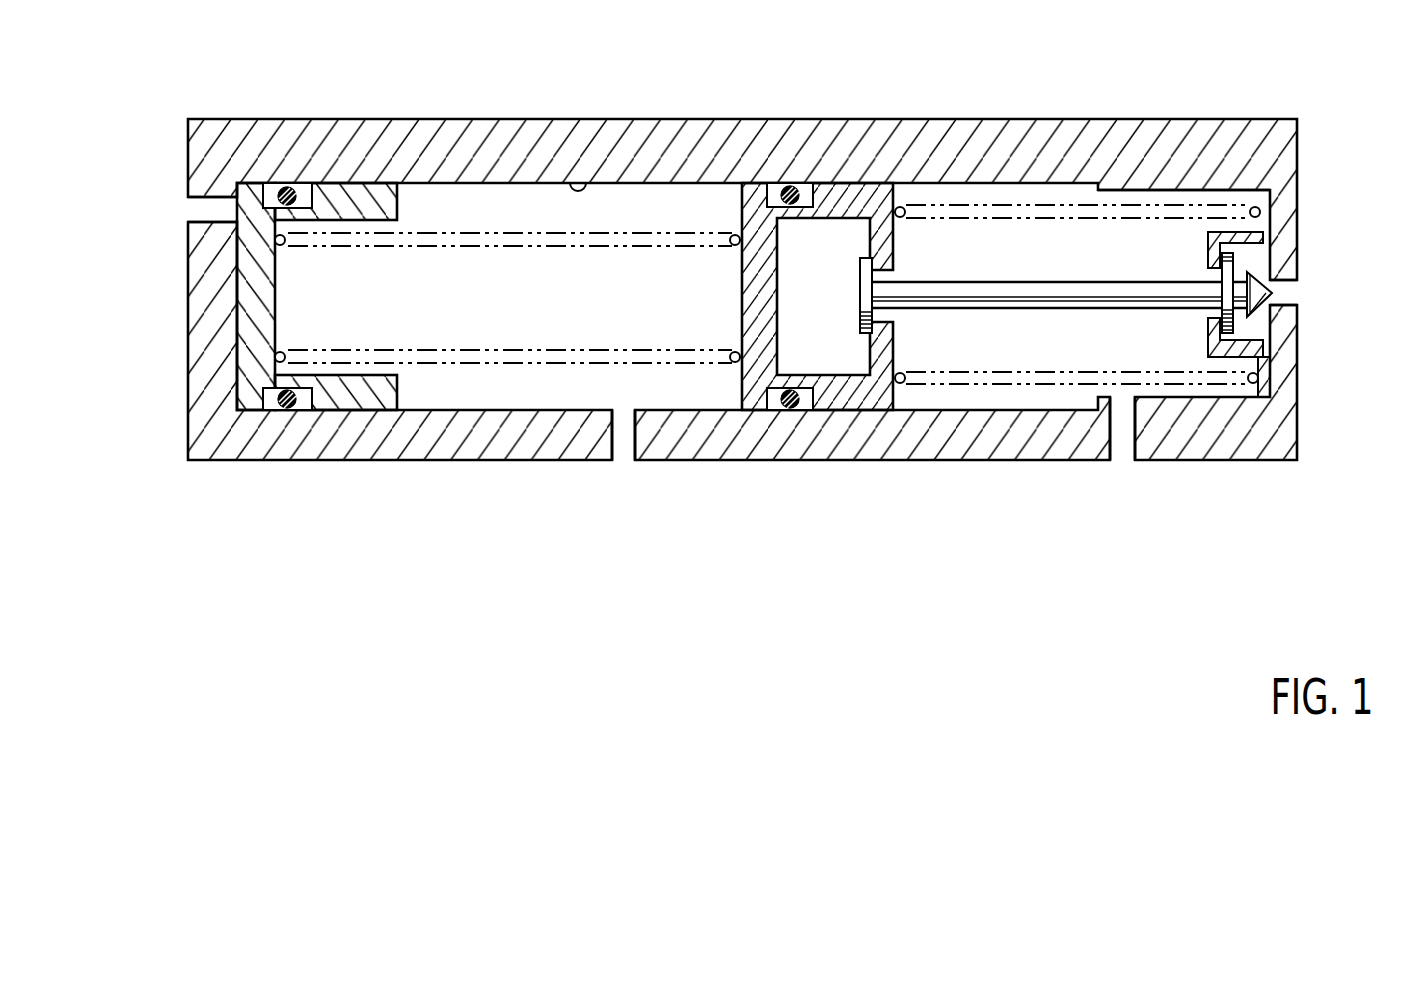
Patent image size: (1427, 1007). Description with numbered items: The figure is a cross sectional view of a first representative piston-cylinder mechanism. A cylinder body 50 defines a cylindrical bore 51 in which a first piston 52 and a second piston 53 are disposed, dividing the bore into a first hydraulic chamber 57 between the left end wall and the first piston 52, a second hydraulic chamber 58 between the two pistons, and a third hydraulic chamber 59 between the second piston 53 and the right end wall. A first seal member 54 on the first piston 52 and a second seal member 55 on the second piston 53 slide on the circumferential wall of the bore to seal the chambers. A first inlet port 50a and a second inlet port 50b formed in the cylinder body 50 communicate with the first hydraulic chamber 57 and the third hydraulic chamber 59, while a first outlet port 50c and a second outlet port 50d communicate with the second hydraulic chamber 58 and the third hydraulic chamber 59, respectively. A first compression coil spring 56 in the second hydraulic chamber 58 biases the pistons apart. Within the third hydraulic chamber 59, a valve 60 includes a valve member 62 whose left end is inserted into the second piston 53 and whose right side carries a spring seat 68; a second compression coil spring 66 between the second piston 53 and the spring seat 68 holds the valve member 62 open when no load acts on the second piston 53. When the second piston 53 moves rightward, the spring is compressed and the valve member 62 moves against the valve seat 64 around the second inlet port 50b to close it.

The cylinder body 50 is at (655, 119).
The first inlet port 50a is at (214, 210).
The second inlet port 50b is at (1210, 345).
The first outlet port 50c is at (622, 452).
The second outlet port 50d is at (1125, 447).
The cylindrical bore 51 is at (576, 183).
The first piston 52 is at (362, 210).
The second piston 53 is at (860, 190).
The first seal member 54 is at (282, 410).
The second seal member 55 is at (789, 410).
The first compression coil spring 56 is at (452, 355).
The first hydraulic chamber 57 is at (237, 325).
The second hydraulic chamber 58 is at (465, 207).
The third hydraulic chamber 59 is at (1047, 243).
The valve 60 is at (1176, 230).
The valve member 62 is at (1285, 268).
The valve seat 64 is at (1222, 343).
The second compression coil spring 66 is at (1002, 378).
The spring seat 68 is at (1237, 236).